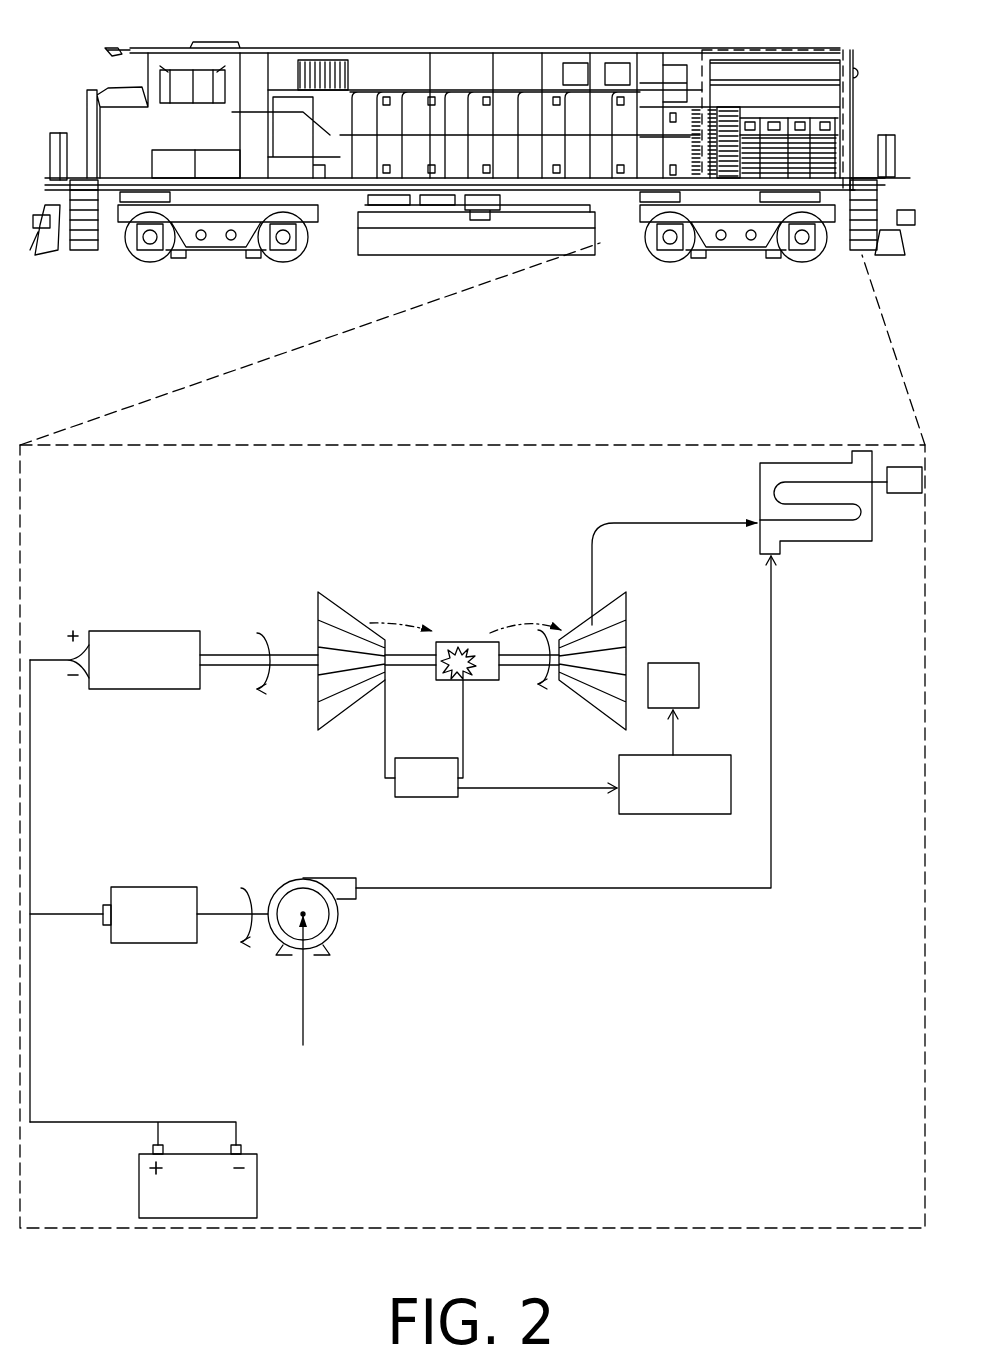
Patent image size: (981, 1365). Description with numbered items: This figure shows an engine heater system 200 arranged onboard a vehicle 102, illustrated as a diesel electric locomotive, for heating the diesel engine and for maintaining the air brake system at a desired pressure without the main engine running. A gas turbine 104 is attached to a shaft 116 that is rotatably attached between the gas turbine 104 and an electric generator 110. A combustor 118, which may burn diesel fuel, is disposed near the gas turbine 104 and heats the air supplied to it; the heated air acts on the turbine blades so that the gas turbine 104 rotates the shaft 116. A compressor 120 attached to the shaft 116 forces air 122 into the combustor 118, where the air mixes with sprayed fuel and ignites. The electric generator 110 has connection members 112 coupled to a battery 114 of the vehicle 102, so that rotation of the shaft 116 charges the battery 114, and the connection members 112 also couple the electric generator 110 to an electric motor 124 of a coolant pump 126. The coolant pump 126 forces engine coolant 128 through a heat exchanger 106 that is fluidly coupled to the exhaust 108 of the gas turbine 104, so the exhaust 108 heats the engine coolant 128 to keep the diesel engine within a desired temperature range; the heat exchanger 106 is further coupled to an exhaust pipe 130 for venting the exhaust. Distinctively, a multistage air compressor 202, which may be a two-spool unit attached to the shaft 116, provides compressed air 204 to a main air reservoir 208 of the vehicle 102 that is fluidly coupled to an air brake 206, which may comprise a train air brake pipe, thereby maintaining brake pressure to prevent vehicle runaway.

The vehicle 102 is at (88, 24).
The engine heater system 200 is at (368, 445).
The gas turbine 104 is at (630, 589).
The heat exchanger 106 is at (756, 482).
The exhaust 108 is at (600, 530).
The electric generator 110 is at (134, 627).
The connection members 112 is at (74, 702).
The battery 114 is at (136, 1177).
The shaft 116 is at (308, 650).
The combustor 118 is at (465, 640).
The compressor 120 is at (316, 593).
The air 122 is at (548, 625).
The electric motor 124 is at (146, 883).
The coolant pump 126 is at (276, 882).
The engine coolant 128 is at (460, 888).
The exhaust pipe 130 is at (907, 493).
The multistage air compressor 202 is at (415, 797).
The compressed air 204 is at (527, 788).
The air brake 206 is at (699, 664).
The main air reservoir 208 is at (671, 814).